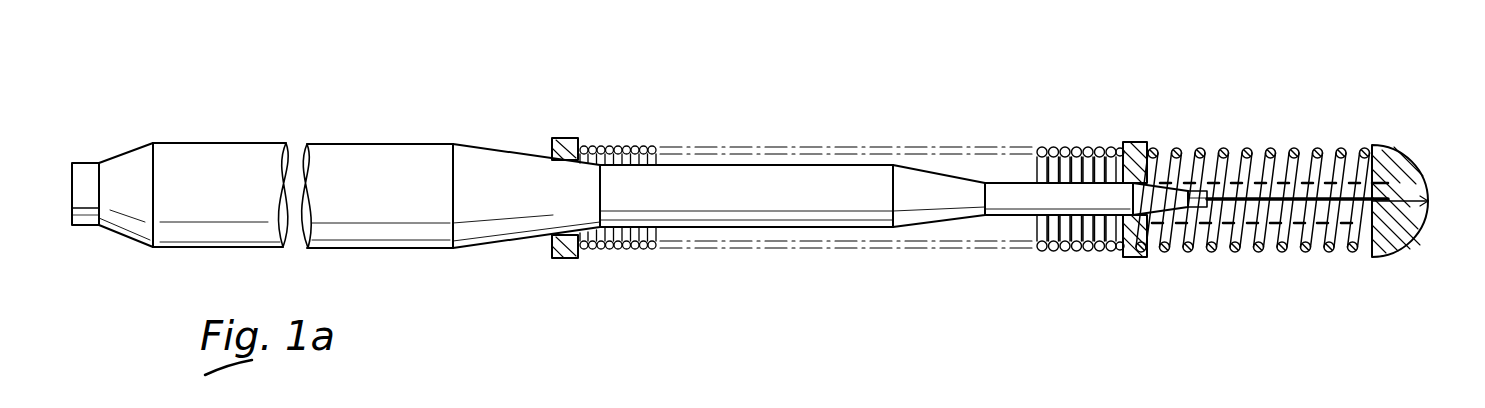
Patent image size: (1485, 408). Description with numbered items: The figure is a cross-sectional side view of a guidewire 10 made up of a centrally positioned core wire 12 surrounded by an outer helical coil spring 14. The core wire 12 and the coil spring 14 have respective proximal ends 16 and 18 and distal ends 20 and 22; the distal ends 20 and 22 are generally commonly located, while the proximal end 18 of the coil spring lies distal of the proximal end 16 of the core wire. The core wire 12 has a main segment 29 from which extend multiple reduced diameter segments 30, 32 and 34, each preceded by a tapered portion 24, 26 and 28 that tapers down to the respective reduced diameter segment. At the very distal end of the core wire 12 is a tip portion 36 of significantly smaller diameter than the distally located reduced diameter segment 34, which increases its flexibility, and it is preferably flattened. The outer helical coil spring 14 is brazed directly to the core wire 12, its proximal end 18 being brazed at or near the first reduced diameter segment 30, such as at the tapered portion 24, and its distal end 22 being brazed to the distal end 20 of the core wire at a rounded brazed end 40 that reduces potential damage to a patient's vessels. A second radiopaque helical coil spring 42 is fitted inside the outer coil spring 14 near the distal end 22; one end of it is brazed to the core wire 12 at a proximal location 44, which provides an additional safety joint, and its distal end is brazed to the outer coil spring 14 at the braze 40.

The guidewire 10 is at (255, 129).
The centrally positioned core wire 12 is at (430, 250).
The outer helical coil spring 14 is at (651, 146).
The proximal end of core wire 16 is at (68, 172).
The proximal end of outer helical coil spring 18 is at (583, 140).
The distal end of core wire 20 is at (1428, 199).
The distal end of outer helical coil spring 22 is at (1362, 155).
The tapered portion 24 is at (500, 149).
The tapered portion 26 is at (925, 170).
The tapered portion 28 is at (1163, 190).
The main segment 29 is at (398, 143).
The reduced diameter segment 30 is at (780, 170).
The reduced diameter segment 32 is at (1008, 182).
The reduced diameter segment 34 is at (1150, 195).
The tip portion 36 is at (1302, 173).
The brazed end 40 is at (1402, 238).
The second radiopaque helical coil spring 42 is at (1260, 232).
The proximal location 44 is at (1135, 258).